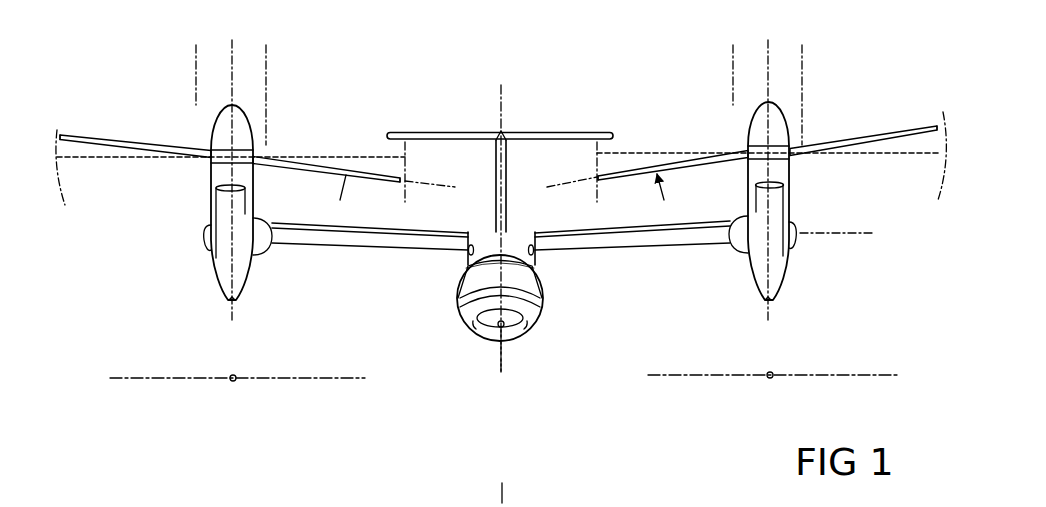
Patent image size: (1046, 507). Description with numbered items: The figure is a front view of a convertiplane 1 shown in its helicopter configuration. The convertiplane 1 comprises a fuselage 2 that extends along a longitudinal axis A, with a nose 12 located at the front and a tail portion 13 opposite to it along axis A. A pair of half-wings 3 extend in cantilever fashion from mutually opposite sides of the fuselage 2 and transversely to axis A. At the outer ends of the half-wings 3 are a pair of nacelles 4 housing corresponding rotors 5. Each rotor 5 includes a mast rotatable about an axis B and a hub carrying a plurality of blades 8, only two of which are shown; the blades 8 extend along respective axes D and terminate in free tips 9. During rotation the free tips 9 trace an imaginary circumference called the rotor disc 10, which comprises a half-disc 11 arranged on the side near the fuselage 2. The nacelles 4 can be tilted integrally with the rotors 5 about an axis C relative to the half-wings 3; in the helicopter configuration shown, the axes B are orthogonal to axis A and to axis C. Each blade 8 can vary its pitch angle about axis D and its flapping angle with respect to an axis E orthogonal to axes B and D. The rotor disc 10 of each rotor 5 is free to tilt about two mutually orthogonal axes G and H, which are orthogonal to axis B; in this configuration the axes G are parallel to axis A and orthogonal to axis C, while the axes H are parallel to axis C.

The convertiplane 1 is at (576, 74).
The fuselage 2 is at (547, 320).
The half-wings 3 is at (380, 236).
The nacelles 4 is at (222, 263).
The rotors 5 is at (215, 297).
The blades 8 is at (165, 150).
The free tips 9 is at (62, 134).
The rotor disc 10 is at (150, 175).
The half-disc 11 is at (370, 154).
The nose 12 is at (478, 307).
The tail portion 13 is at (507, 221).
The longitudinal axis A is at (496, 328).
The rotor axis B is at (236, 60).
The tilt axis C is at (845, 226).
The blade axis D is at (448, 166).
The flapping axis E is at (195, 89).
The rotor disc tilt axis G is at (236, 390).
The rotor disc tilt axis H is at (317, 384).